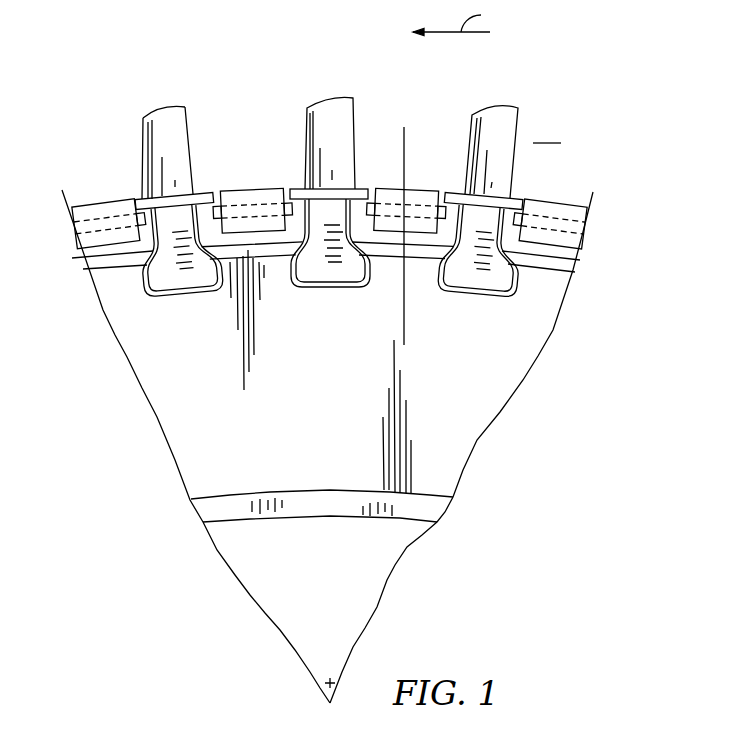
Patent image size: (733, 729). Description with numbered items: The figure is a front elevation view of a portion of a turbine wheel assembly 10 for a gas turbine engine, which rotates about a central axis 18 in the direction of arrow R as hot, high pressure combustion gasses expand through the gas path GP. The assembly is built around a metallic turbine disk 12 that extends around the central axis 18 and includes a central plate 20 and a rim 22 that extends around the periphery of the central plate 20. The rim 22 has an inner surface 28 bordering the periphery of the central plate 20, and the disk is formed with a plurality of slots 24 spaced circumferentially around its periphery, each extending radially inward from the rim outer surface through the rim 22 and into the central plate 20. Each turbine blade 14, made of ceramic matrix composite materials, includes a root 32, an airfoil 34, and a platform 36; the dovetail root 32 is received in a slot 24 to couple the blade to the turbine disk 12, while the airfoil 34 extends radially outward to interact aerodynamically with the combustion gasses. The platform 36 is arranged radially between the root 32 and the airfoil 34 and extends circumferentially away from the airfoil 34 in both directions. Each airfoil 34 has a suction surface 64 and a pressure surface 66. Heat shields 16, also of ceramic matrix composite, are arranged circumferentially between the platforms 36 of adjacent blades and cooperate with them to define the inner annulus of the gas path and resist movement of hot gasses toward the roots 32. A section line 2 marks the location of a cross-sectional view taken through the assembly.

The section line 2- 2 is at (380, 138).
The turbine wheel assembly 10 is at (617, 114).
The turbine disk 12 is at (515, 378).
The turbine blade 14 is at (331, 114).
The heat shield 16 is at (90, 193).
The central axis 18 is at (332, 681).
The central plate 20 is at (460, 455).
The rim 22 is at (560, 246).
The slot 24 is at (207, 291).
The inner surface 28 is at (118, 270).
The root 32 is at (173, 289).
The airfoil 34 is at (153, 143).
The platform 36 is at (137, 183).
The suction surface 64 is at (163, 113).
The pressure surface 66 is at (173, 128).